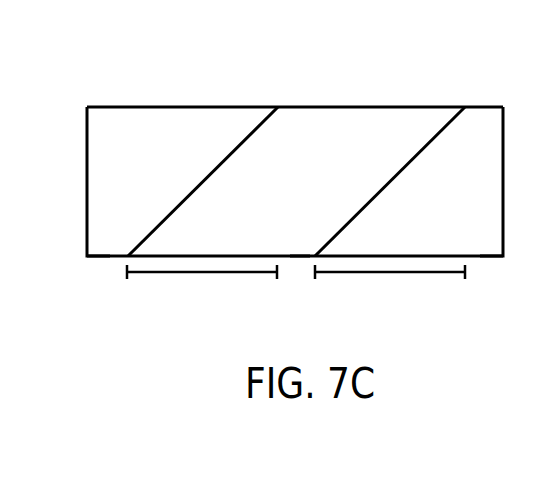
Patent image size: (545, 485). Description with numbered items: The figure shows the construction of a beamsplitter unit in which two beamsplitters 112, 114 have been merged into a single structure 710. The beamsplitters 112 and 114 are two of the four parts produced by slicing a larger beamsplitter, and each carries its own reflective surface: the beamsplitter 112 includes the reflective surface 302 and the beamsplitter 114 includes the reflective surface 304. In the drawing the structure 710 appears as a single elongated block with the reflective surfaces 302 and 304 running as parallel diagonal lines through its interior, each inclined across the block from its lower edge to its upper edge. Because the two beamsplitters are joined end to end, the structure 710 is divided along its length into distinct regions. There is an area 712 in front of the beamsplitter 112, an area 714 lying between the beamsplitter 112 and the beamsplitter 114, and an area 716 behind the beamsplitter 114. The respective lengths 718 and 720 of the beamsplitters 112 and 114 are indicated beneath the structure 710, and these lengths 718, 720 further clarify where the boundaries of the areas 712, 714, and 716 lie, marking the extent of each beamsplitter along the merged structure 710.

The beamsplitter 112 is at (155, 89).
The beamsplitter 114 is at (397, 87).
The structure 710 is at (296, 105).
The reflective surface 302 is at (213, 172).
The reflective surface 304 is at (387, 185).
The area 712 is at (102, 266).
The area 714 is at (299, 266).
The area 716 is at (487, 266).
The length 718 is at (192, 273).
The length 720 is at (378, 273).